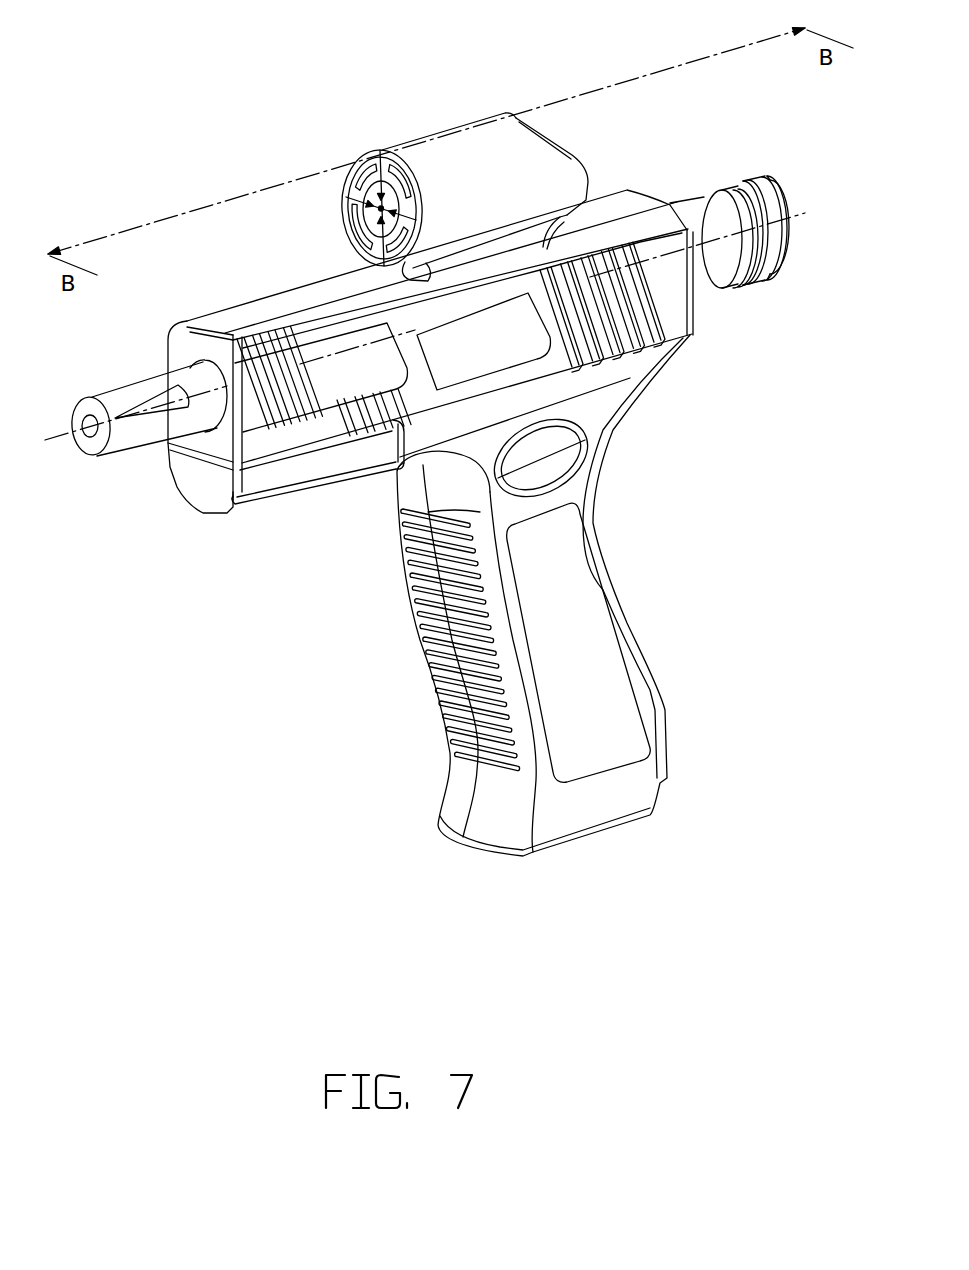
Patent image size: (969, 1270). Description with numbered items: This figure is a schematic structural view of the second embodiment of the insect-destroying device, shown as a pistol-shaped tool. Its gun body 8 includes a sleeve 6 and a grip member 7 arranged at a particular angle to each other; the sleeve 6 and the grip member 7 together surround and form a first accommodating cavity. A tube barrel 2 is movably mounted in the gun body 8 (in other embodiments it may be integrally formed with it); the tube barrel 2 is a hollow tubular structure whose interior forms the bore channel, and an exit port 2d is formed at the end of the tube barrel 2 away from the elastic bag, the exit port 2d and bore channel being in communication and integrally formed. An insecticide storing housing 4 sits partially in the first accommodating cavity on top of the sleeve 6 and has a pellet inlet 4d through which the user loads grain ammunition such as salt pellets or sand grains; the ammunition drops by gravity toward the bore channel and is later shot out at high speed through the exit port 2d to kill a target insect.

The tube barrel 2 is at (735, 210).
The exit port 2d is at (85, 410).
The insecticide storing housing 4 is at (455, 162).
The pellet inlet 4d is at (554, 140).
The sleeve 6 is at (633, 210).
The grip member 7 is at (623, 633).
The gun body 8 is at (264, 447).